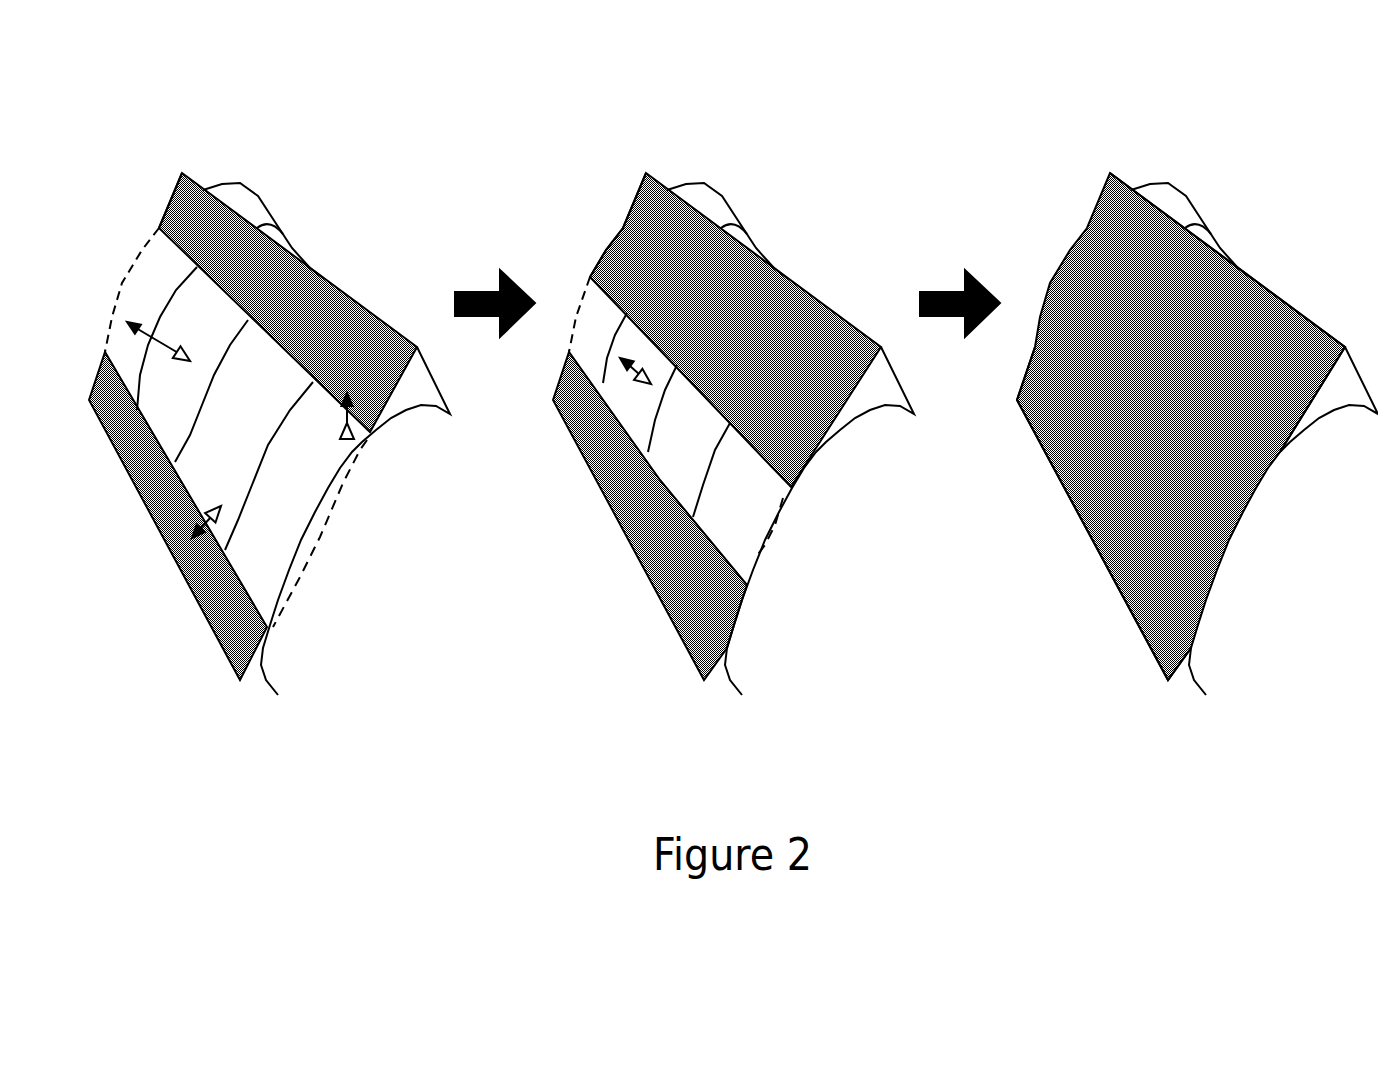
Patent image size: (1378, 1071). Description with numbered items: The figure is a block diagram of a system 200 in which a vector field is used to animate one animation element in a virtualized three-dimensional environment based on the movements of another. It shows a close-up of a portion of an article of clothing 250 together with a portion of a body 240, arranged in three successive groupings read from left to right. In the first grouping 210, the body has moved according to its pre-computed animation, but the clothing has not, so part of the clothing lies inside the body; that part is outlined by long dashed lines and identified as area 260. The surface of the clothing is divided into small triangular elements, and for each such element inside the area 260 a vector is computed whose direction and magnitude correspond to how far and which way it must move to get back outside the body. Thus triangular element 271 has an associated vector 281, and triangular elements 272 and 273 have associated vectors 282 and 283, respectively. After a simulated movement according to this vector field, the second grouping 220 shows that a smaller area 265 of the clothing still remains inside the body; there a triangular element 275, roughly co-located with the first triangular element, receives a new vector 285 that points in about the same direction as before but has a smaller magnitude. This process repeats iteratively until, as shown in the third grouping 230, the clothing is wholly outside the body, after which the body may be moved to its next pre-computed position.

The system 200 is at (224, 85).
The grouping 210 is at (347, 665).
The grouping 220 is at (741, 451).
The grouping 230 is at (1197, 451).
The portion of the body 240 is at (243, 207).
The portion of the clothing 250 is at (217, 630).
The area 260 is at (287, 493).
The area 265 is at (748, 503).
The triangular element 271 is at (180, 350).
The triangular element 272 is at (208, 508).
The triangular element 273 is at (340, 424).
The triangular element 275 is at (653, 377).
The vector 281 is at (127, 318).
The vector 282 is at (190, 540).
The vector 283 is at (342, 393).
The vector 285 is at (620, 357).